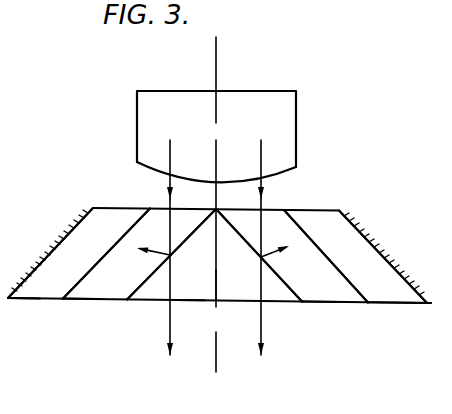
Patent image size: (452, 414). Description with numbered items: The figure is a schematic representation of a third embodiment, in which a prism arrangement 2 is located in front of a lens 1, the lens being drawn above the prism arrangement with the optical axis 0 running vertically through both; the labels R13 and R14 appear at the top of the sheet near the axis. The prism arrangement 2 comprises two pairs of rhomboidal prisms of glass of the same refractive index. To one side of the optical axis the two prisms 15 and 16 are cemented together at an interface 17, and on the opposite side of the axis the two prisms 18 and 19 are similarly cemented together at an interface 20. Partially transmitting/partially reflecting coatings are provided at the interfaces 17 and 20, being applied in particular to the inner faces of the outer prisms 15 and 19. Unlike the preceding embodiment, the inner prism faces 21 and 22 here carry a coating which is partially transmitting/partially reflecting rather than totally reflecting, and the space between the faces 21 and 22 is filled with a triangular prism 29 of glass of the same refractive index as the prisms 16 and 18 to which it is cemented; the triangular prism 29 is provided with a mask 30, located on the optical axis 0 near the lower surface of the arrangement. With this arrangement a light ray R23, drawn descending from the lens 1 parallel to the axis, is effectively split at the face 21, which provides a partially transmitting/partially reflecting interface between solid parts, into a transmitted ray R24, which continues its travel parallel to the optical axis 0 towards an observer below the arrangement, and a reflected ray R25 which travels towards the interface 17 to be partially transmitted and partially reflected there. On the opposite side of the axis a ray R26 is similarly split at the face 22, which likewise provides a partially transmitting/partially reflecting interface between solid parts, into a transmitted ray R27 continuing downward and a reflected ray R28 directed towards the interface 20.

The optical axis 0 is at (209, 219).
The lens 1 is at (137, 104).
The prism arrangement 2 is at (372, 215).
The prism 15 is at (32, 299).
The prism 16 is at (88, 299).
The interface 17 is at (85, 275).
The prism 18 is at (325, 302).
The prism 19 is at (397, 302).
The interface 20 is at (329, 259).
The inner prism face 21 is at (201, 232).
The inner prism face 22 is at (229, 232).
The triangular prism 29 is at (191, 300).
The mask 30 is at (216, 285).
The light ray R13 is at (350, 8).
The light ray R14 is at (293, 11).
The light ray R23 is at (146, 171).
The transmitted ray R24 is at (146, 280).
The reflected ray R25 is at (142, 260).
The light ray R26 is at (283, 171).
The transmitted ray R27 is at (284, 281).
The reflected ray R28 is at (292, 259).